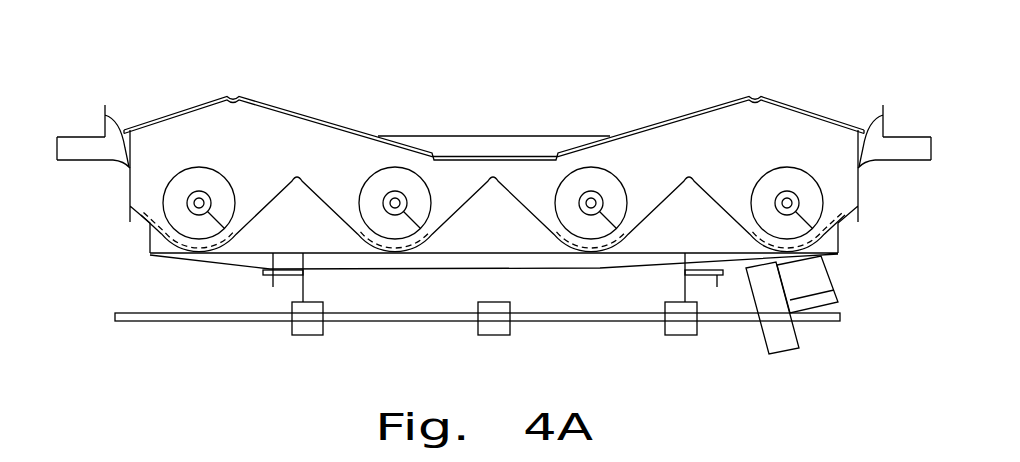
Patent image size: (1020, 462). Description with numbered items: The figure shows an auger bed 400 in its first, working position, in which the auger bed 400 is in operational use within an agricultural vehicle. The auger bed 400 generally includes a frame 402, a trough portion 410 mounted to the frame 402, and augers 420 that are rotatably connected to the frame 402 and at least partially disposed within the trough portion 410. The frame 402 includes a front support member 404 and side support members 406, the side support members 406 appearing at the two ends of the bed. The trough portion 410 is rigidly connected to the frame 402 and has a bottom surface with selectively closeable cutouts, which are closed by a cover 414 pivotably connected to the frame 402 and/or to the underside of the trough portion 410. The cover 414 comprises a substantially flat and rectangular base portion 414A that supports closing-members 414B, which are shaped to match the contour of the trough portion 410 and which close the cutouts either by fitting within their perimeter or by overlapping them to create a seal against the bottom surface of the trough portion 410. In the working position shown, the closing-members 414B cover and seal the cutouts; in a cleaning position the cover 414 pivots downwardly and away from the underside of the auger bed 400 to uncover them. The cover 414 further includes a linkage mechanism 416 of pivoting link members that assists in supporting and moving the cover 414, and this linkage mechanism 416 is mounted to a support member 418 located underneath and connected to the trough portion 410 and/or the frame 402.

The auger bed 400 is at (503, 132).
The frame 402 is at (878, 223).
The front support member 404 is at (785, 127).
The side support members 406 is at (130, 187).
The trough portion 410 is at (143, 214).
The cover 414 is at (230, 267).
The base portion 414A is at (290, 257).
The closing-members 414B is at (173, 233).
The linkage mechanism 416 is at (428, 330).
The support member 418 is at (160, 318).
The augers 420 is at (770, 170).